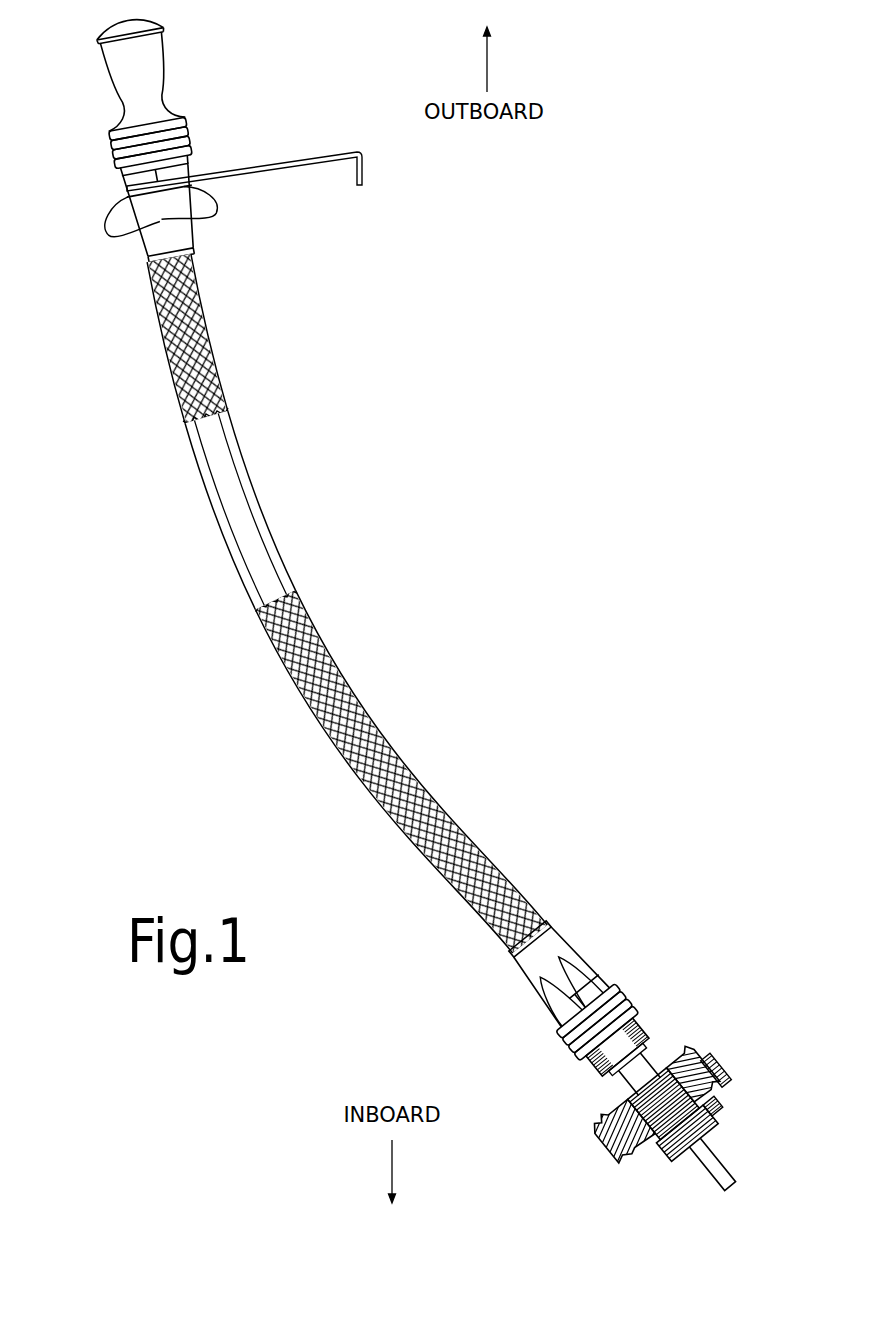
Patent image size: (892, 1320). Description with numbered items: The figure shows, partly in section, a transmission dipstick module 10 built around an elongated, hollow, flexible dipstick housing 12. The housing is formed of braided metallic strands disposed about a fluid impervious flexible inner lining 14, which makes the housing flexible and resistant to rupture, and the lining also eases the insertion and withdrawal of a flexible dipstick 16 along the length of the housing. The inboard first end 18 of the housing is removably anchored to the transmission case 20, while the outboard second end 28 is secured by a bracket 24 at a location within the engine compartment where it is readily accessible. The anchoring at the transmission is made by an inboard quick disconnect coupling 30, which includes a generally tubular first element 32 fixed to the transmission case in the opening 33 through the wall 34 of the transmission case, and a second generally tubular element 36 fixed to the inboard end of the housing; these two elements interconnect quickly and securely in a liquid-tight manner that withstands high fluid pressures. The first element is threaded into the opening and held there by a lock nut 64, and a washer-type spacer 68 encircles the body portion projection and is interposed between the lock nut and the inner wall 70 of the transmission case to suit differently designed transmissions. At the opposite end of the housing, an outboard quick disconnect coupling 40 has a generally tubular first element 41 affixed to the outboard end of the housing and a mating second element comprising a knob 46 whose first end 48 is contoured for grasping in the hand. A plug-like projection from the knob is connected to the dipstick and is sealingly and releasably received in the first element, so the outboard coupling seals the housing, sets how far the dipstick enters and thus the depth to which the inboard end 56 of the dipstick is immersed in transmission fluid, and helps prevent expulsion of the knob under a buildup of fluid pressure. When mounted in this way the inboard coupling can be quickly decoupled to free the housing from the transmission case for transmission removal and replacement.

The transmission dipstick module 10 is at (398, 480).
The dipstick housing 12 is at (203, 300).
The flexible inner lining 14 is at (258, 505).
The flexible dipstick 16 is at (228, 458).
The inboard first end 18 is at (521, 898).
The transmission case 20 is at (694, 1050).
The bracket 24 is at (302, 160).
The outboard second end 28 is at (196, 268).
The inboard quick disconnect coupling 30 is at (637, 975).
The first element 32 is at (560, 1086).
The opening 33 is at (700, 1134).
The wall 34 is at (668, 1066).
The second element 36 is at (594, 922).
The outboard quick disconnect coupling 40 is at (207, 162).
The first element 41 is at (112, 226).
The knob 46 is at (101, 66).
The first end 48 is at (161, 40).
The inboard end 56 is at (738, 1170).
The lock nut 64 is at (716, 1110).
The washer-type spacer 68 is at (655, 1148).
The inner wall 70 is at (712, 1086).